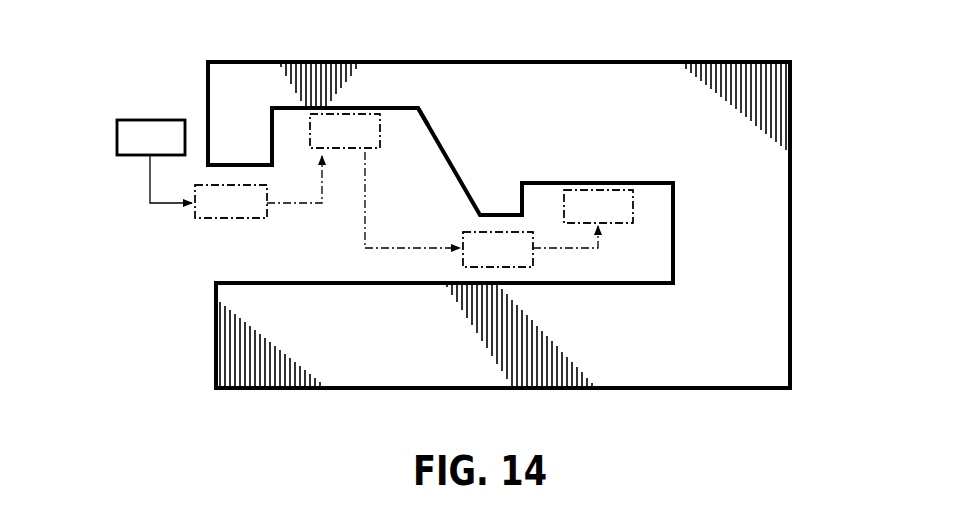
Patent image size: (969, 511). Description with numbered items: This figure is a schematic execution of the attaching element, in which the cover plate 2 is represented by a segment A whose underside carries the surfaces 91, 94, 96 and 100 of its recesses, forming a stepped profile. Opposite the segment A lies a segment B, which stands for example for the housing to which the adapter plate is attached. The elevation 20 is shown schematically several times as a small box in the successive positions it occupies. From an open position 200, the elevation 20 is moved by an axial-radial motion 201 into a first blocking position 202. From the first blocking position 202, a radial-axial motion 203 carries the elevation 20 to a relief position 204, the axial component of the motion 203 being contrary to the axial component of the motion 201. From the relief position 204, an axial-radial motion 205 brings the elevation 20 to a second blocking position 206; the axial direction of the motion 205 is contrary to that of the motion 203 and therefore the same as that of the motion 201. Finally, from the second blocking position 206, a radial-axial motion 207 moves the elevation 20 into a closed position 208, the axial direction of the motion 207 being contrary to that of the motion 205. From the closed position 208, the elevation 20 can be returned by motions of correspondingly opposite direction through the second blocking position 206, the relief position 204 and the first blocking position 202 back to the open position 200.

The cover plate 2 is at (205, 55).
The segment A is at (607, 78).
The segment B is at (612, 367).
The surface 100 is at (231, 164).
The surface 96 is at (413, 110).
The surface 94 is at (494, 212).
The surface 91 is at (538, 182).
The elevation 20 is at (610, 219).
The open position 200 is at (114, 116).
The axial-radial motion 201 is at (149, 202).
The first blocking position 202 is at (209, 222).
The radial-axial motion 203 is at (313, 212).
The relief position 204 is at (370, 153).
The axial-radial motion 205 is at (392, 240).
The second blocking position 206 is at (522, 270).
The radial-axial motion 207 is at (598, 252).
The closed position 208 is at (645, 190).